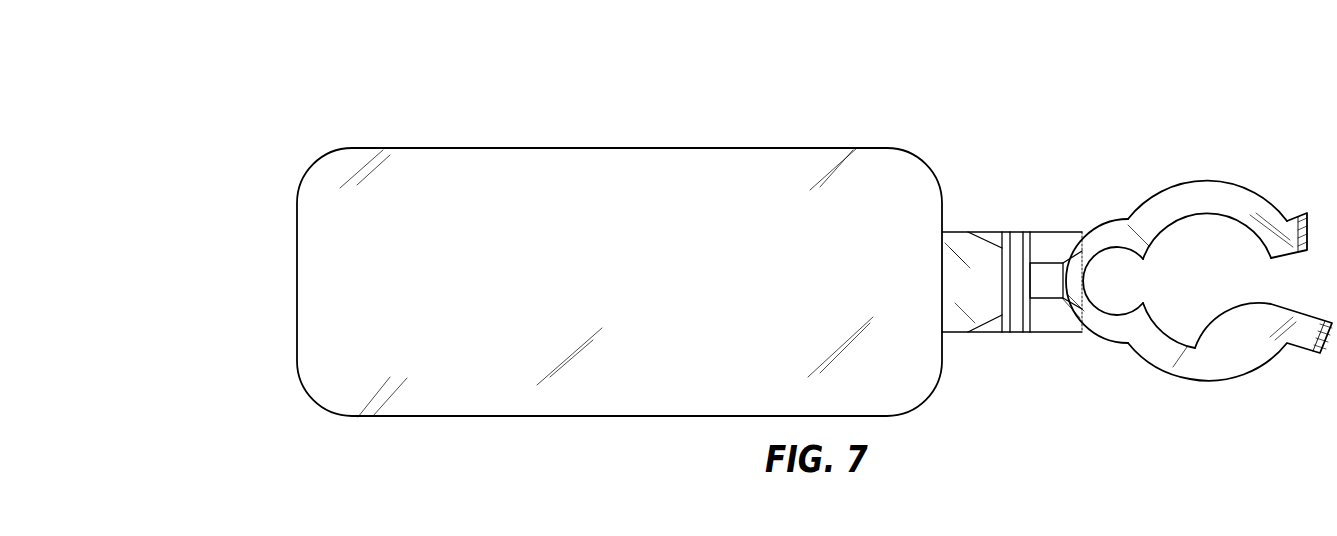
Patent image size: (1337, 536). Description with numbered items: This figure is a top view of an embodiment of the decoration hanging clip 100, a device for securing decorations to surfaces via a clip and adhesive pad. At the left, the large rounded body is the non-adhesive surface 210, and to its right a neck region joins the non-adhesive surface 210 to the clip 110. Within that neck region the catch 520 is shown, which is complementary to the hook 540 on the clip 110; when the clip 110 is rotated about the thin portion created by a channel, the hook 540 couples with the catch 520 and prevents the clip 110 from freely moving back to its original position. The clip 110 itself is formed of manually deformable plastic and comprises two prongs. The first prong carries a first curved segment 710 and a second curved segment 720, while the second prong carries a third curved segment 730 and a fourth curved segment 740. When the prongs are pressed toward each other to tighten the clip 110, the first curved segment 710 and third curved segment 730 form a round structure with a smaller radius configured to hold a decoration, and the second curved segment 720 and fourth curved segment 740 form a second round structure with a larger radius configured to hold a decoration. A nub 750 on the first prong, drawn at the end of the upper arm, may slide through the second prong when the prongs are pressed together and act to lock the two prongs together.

The decoration hanging clip 100 is at (260, 92).
The non-adhesive surface 210 is at (740, 168).
The clip 110 is at (1092, 134).
The first curved segment 710 is at (1092, 216).
The second curved segment 720 is at (1192, 188).
The nub 750 is at (1287, 198).
The third curved segment 730 is at (1119, 338).
The fourth curved segment 740 is at (1219, 367).
The catch 520 is at (964, 294).
The hook 540 is at (1045, 296).